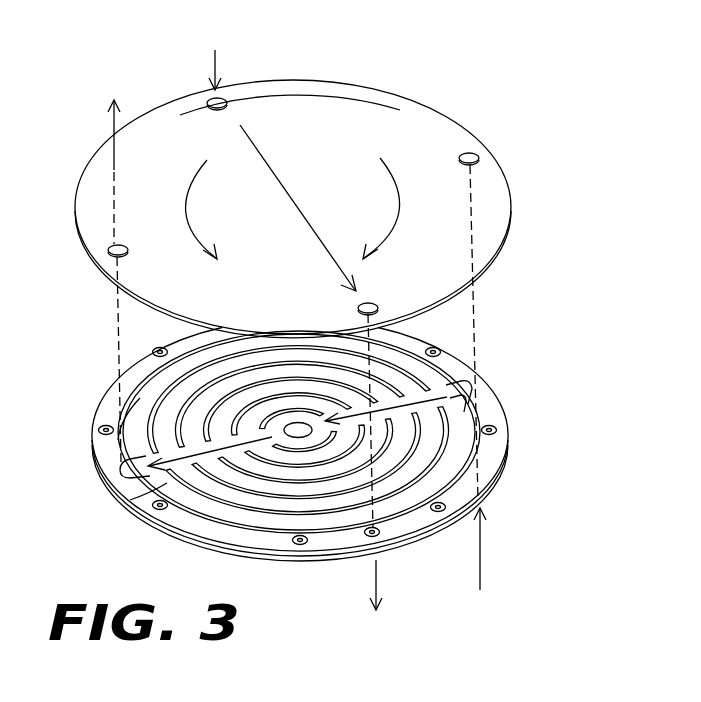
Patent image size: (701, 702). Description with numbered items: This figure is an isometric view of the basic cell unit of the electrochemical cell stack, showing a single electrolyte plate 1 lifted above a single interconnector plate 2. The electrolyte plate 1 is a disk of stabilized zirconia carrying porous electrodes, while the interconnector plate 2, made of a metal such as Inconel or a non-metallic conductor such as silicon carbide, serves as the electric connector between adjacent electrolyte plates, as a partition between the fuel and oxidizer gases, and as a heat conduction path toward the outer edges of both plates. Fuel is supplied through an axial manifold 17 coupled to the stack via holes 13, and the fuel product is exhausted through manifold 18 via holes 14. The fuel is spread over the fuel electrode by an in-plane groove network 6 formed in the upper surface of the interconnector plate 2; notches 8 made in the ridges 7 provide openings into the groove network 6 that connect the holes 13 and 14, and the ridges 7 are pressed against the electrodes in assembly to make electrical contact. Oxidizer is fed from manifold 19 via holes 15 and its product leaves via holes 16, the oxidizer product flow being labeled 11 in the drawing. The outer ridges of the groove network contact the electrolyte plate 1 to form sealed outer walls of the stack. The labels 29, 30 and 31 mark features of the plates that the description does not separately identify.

The electrolyte plate 1 is at (494, 151).
The interconnector plate 2 is at (520, 398).
The groove network 6 is at (141, 398).
The ridges 7 is at (275, 500).
The notches 8 is at (442, 378).
The oxidizer product outlet 11 is at (425, 477).
The holes 13 is at (466, 153).
The holes 14 is at (124, 244).
The holes 15 is at (228, 103).
The holes 16 is at (372, 538).
The manifold 17 is at (549, 549).
The manifold 18 is at (119, 151).
The manifold 19 is at (229, 51).
The plate outer edge 29 is at (322, 83).
The rim 30 is at (504, 431).
The plate face 31 is at (487, 453).